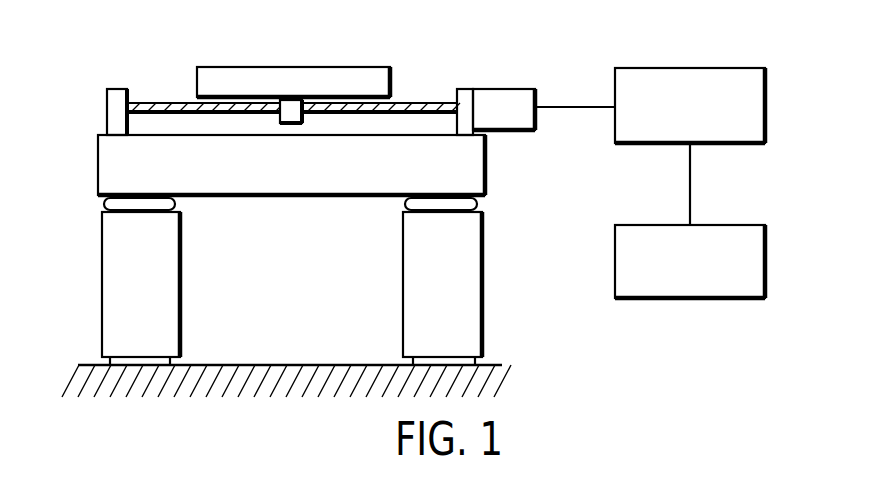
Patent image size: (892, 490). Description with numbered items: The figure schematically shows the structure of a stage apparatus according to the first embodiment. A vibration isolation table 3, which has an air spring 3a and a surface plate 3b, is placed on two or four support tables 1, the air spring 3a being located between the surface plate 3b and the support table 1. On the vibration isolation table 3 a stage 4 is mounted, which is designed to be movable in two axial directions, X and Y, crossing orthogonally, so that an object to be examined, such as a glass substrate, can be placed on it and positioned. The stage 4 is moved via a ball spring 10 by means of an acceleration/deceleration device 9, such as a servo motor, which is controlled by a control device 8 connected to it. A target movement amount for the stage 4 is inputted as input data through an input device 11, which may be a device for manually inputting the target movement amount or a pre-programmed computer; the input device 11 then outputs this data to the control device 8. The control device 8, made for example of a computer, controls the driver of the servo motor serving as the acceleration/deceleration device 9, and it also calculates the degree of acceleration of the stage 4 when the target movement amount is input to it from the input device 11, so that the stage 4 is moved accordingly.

The support table 1 is at (482, 306).
The vibration isolation table 3 is at (341, 178).
The air spring 3a is at (478, 203).
The surface plate 3b is at (472, 172).
The stage 4 is at (372, 72).
The control device 8 is at (733, 68).
The acceleration/deceleration device 9 is at (518, 94).
The ball spring 10 is at (440, 100).
The input device 11 is at (733, 225).